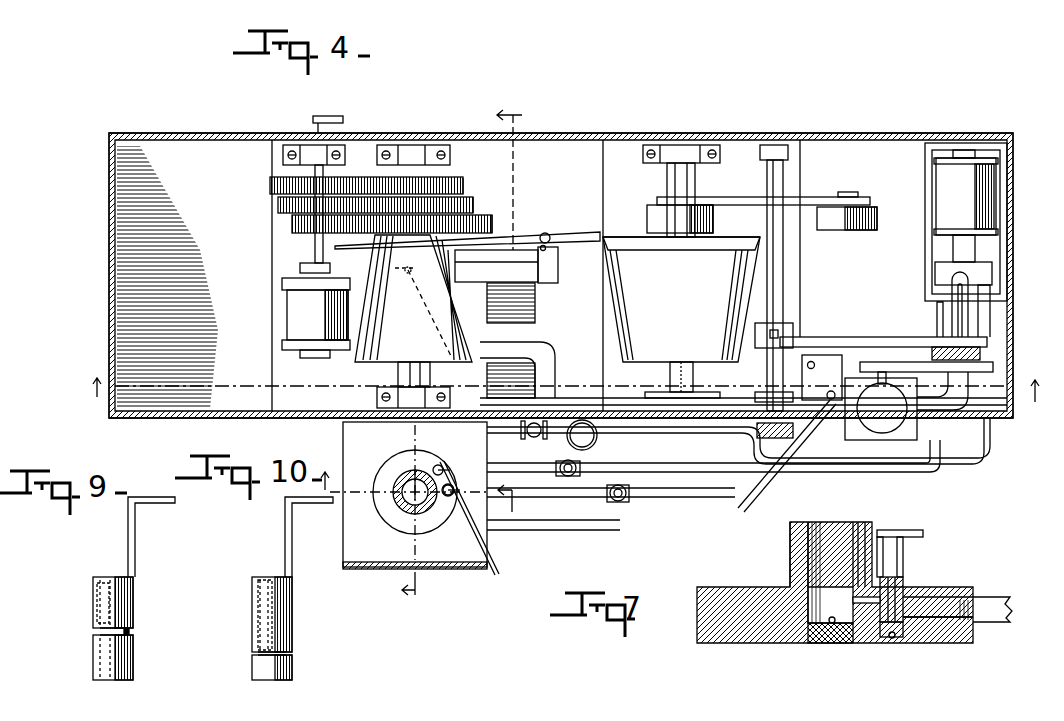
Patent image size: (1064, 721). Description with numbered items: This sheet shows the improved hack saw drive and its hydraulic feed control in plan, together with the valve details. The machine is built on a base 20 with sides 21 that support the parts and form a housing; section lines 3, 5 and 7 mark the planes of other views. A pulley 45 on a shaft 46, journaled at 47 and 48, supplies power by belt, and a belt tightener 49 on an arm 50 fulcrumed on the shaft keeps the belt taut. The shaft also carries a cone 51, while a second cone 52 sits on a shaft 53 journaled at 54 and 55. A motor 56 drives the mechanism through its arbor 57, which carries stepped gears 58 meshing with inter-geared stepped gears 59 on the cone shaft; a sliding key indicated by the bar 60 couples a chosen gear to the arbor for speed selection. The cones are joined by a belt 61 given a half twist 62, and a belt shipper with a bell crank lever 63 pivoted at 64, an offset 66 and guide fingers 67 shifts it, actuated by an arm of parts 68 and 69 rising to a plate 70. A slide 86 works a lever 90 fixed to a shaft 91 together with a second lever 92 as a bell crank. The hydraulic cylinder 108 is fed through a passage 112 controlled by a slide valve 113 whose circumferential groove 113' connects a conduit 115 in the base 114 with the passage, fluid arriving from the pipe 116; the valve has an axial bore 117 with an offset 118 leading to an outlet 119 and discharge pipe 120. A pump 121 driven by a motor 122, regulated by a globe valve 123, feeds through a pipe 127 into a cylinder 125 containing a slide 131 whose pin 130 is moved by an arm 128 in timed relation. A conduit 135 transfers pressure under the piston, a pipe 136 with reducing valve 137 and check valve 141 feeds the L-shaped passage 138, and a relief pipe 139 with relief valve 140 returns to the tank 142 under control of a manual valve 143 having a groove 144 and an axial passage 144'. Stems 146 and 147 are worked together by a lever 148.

In FIG. 4, the section line 3- 3 is at (564, 410).
In FIG. 4, the section line 5- 5 is at (462, 353).
In FIG. 4, the section line 7- 7 is at (511, 500).
In FIG. 10, the section line 7- 7 is at (324, 472).
In FIG. 4, the base 20 is at (565, 145).
In FIG. 4, the sides 21 is at (112, 300).
In FIG. 4, the pulley 45 is at (648, 218).
In FIG. 4, the shaft 46 is at (695, 176).
In FIG. 4, the journal 47 is at (670, 146).
In FIG. 4, the journal 48 is at (700, 395).
In FIG. 4, the belt tightener 49 is at (852, 232).
In FIG. 4, the arm 50 is at (808, 200).
In FIG. 4, the cone 51 is at (632, 363).
In FIG. 4, the second cone 52 is at (413, 298).
In FIG. 4, the shaft 53 is at (428, 374).
In FIG. 4, the journal 54 is at (410, 150).
In FIG. 4, the journal 55 is at (405, 400).
In FIG. 4, the motor 56 is at (290, 310).
In FIG. 4, the arbor 57 is at (314, 245).
In FIG. 4, the stepped gears 58 is at (292, 222).
In FIG. 4, the inter-geared stepped gears 59 is at (492, 222).
In FIG. 4, the bar 60 is at (316, 120).
In FIG. 4, the belt 61 is at (620, 240).
In FIG. 4, the half twist 62 is at (505, 242).
In FIG. 4, the bell crank lever 63 is at (496, 266).
In FIG. 4, the pivot 64 is at (390, 268).
In FIG. 4, the offset 66 is at (558, 268).
In FIG. 4, the guide fingers 67 is at (551, 237).
In FIG. 4, the arm part 68 is at (550, 358).
In FIG. 4, the arm part 69 is at (565, 398).
In FIG. 4, the plate 70 is at (822, 377).
In FIG. 4, the slide 86 is at (985, 354).
In FIG. 4, the lever 90 is at (905, 340).
In FIG. 4, the shaft 91 is at (785, 285).
In FIG. 4, the second lever 92 is at (778, 440).
In FIG. 4, the cylinder 108 is at (402, 506).
In FIG. 7, the cylinder 108 is at (797, 546).
In FIG. 7, the passage 112 is at (870, 525).
In FIG. 4, the slide valve 113 is at (453, 508).
In FIG. 7, the slide valve 113 is at (900, 592).
In FIG. 9, the slide valve 113 is at (138, 602).
In FIG. 9, the circumferential groove 113' is at (93, 631).
In FIG. 4, the base 114 is at (462, 560).
In FIG. 7, the base 114 is at (720, 600).
In FIG. 7, the conduit 115 is at (955, 597).
In FIG. 4, the pipe 116 is at (675, 497).
In FIG. 7, the pipe 116 is at (1003, 598).
In FIG. 7, the axial bore 117 is at (876, 638).
In FIG. 9, the axial bore 117 is at (110, 660).
In FIG. 7, the offset 118 is at (902, 577).
In FIG. 9, the offset 118 is at (96, 590).
In FIG. 7, the outlet 119 is at (892, 640).
In FIG. 4, the pipe 120 is at (535, 530).
In FIG. 4, the pump 121 is at (985, 272).
In FIG. 4, the motor 122 is at (976, 200).
In FIG. 4, the globe valve 123 is at (620, 502).
In FIG. 4, the cylinder 125 is at (846, 437).
In FIG. 4, the pipe 127 is at (968, 384).
In FIG. 4, the arm 128 is at (890, 363).
In FIG. 4, the pin 130 is at (880, 372).
In FIG. 4, the slide 131 is at (886, 412).
In FIG. 7, the conduit 135 is at (942, 622).
In FIG. 4, the pipe 136 is at (510, 435).
In FIG. 4, the reducing valve 137 is at (595, 442).
In FIG. 7, the L-shaped passage 138 is at (826, 644).
In FIG. 4, the relief pipe 139 is at (666, 472).
In FIG. 4, the relief valve 140 is at (568, 477).
In FIG. 4, the check valve 141 is at (534, 440).
In FIG. 4, the tank 142 is at (930, 250).
In FIG. 4, the manual valve 143 is at (417, 468).
In FIG. 10, the manual valve 143 is at (293, 615).
In FIG. 10, the circumferential groove 144 is at (295, 666).
In FIG. 10, the axial passage 144' is at (254, 589).
In FIG. 4, the stem 146 is at (453, 490).
In FIG. 9, the stem 146 is at (136, 541).
In FIG. 4, the stem 147 is at (442, 466).
In FIG. 10, the stem 147 is at (292, 550).
In FIG. 4, the lever 148 is at (497, 578).